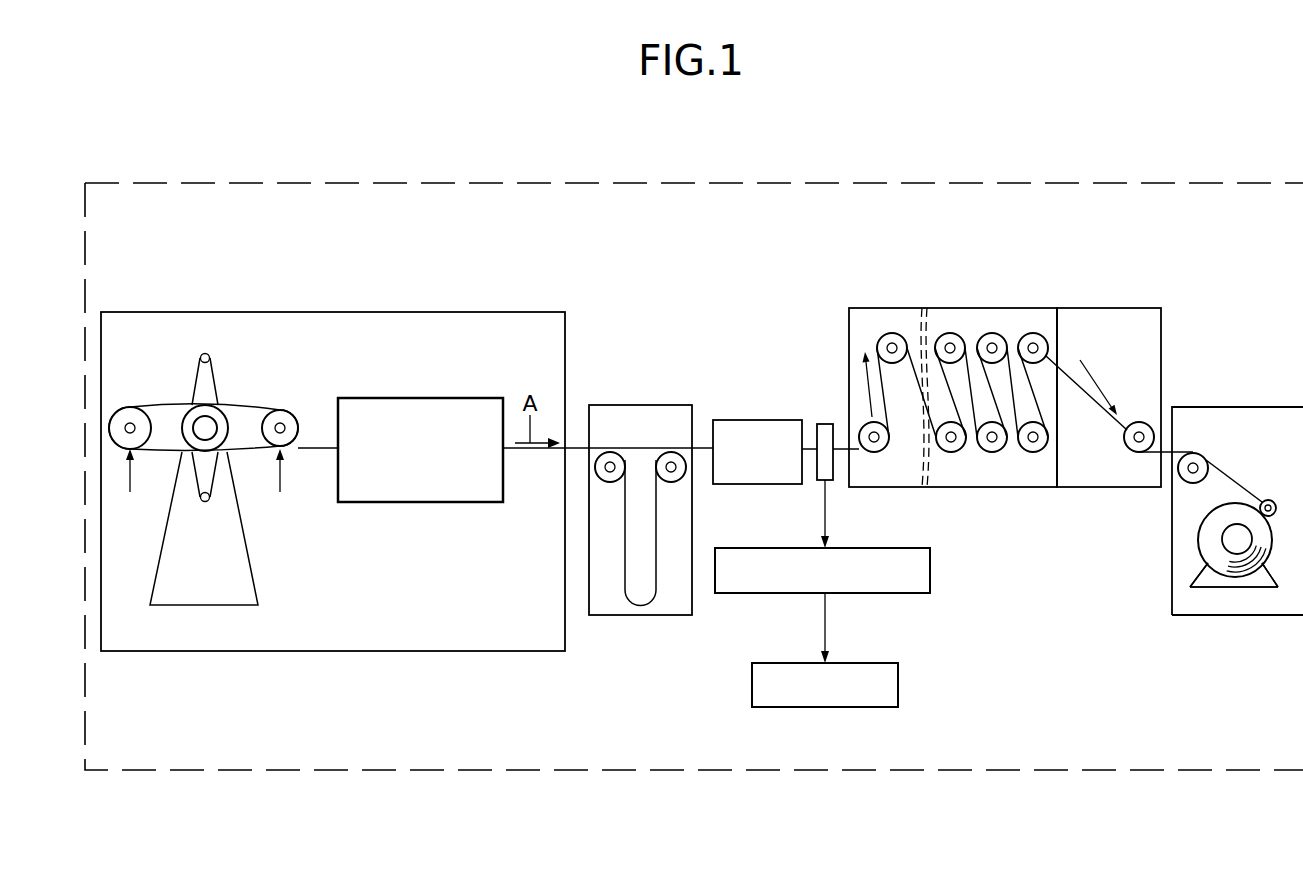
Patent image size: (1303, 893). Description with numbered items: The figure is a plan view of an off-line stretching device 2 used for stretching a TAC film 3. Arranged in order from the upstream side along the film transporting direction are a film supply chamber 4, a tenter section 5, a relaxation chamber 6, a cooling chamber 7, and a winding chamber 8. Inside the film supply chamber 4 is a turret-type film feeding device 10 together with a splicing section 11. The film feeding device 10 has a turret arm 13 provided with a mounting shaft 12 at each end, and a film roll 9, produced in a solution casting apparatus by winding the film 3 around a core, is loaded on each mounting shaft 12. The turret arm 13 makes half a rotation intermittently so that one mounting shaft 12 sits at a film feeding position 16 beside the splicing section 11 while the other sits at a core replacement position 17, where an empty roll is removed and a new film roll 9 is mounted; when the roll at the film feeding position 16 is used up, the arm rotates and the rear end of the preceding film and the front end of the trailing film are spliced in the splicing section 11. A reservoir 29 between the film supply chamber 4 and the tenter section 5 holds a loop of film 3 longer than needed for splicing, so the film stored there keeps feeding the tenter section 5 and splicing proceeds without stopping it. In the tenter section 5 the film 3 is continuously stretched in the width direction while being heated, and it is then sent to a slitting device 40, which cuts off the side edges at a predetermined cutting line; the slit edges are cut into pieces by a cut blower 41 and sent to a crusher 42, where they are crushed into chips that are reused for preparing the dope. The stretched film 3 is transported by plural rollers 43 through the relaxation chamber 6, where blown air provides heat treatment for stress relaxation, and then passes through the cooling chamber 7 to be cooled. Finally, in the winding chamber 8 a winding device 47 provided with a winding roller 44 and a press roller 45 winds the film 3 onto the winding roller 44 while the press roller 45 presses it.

The off-line stretching device 2 is at (643, 183).
The TAC film 3 is at (509, 448).
The film supply chamber 4 is at (130, 323).
The tenter section 5 is at (760, 420).
The relaxation chamber 6 is at (891, 308).
The cooling chamber 7 is at (1108, 308).
The winding chamber 8 is at (1243, 407).
The film roll 9 is at (131, 406).
The turret-type film feeding device 10 is at (211, 368).
The splicing section 11 is at (471, 398).
The mounting shaft 12 is at (285, 426).
The turret arm 13 is at (162, 408).
The film feeding position 16 is at (282, 487).
The core replacement position 17 is at (130, 487).
The reservoir 29 is at (632, 405).
The slitting device 40 is at (826, 440).
The cut blower 41 is at (930, 573).
The crusher 42 is at (898, 687).
The rollers 43 is at (992, 332).
The winding roller 44 is at (1228, 545).
The press roller 45 is at (1268, 500).
The winding device 47 is at (1252, 590).